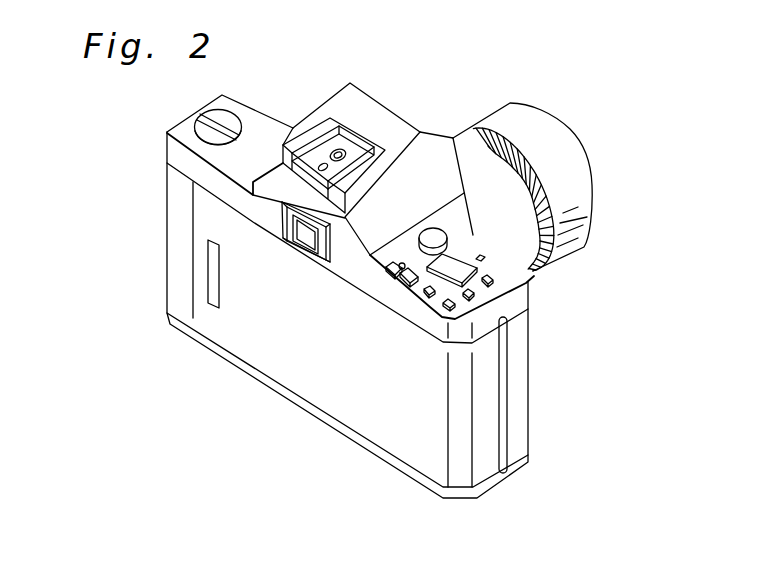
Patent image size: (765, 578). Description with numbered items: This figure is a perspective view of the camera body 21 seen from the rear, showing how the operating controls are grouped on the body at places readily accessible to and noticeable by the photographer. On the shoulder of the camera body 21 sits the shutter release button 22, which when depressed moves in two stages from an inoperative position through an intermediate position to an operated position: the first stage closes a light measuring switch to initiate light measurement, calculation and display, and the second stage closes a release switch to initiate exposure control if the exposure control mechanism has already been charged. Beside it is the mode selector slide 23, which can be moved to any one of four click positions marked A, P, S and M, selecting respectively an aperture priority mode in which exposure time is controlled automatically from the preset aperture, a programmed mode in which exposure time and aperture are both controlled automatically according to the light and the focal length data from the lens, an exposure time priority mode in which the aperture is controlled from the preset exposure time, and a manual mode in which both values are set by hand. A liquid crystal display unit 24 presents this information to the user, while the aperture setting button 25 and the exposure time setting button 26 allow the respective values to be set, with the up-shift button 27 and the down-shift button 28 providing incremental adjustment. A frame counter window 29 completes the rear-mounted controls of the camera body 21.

The camera body 21 is at (520, 382).
The shutter release button 22 is at (430, 230).
The mode selector slide 23 is at (402, 263).
The liquid crystal display unit 24 is at (457, 258).
The aperture setting button 25 is at (427, 293).
The exposure time setting button 26 is at (443, 309).
The up-shift button 27 is at (497, 285).
The down-shift button 28 is at (477, 297).
The frame counter window 29 is at (480, 256).